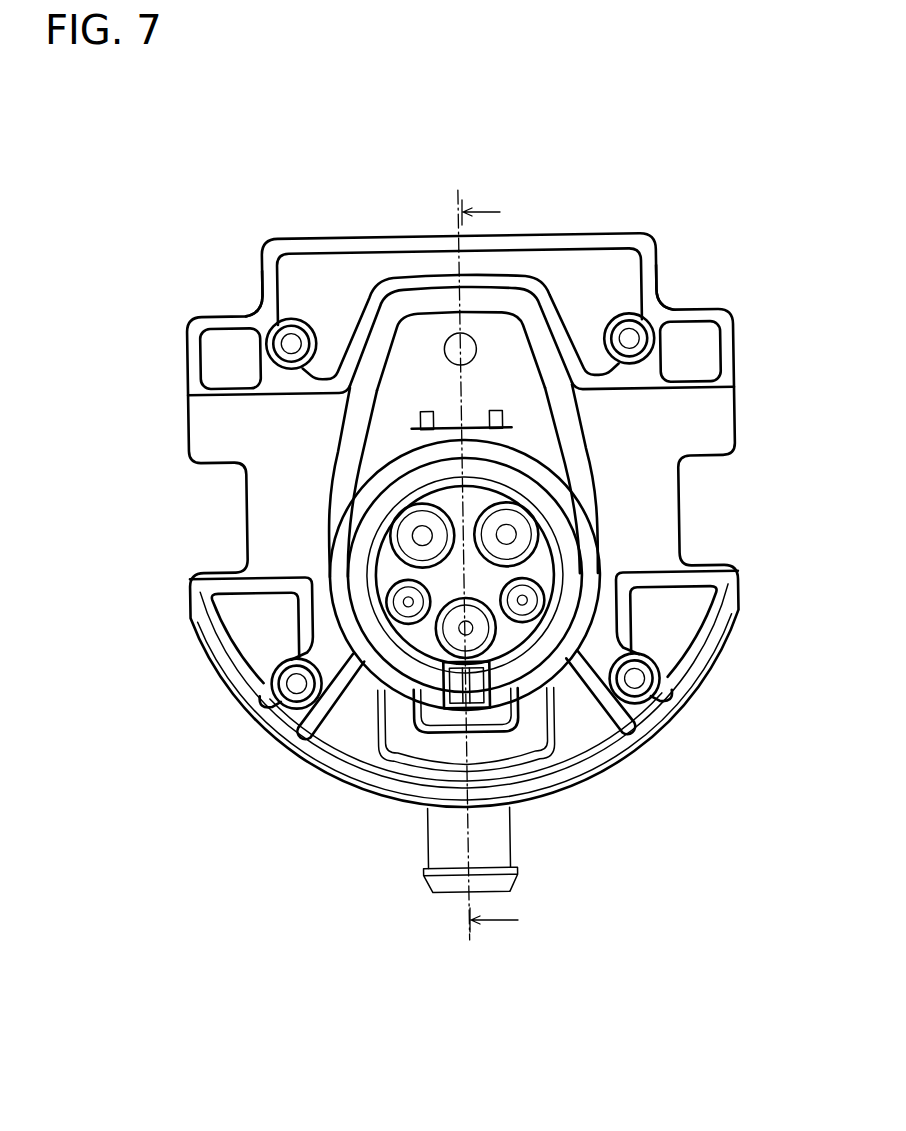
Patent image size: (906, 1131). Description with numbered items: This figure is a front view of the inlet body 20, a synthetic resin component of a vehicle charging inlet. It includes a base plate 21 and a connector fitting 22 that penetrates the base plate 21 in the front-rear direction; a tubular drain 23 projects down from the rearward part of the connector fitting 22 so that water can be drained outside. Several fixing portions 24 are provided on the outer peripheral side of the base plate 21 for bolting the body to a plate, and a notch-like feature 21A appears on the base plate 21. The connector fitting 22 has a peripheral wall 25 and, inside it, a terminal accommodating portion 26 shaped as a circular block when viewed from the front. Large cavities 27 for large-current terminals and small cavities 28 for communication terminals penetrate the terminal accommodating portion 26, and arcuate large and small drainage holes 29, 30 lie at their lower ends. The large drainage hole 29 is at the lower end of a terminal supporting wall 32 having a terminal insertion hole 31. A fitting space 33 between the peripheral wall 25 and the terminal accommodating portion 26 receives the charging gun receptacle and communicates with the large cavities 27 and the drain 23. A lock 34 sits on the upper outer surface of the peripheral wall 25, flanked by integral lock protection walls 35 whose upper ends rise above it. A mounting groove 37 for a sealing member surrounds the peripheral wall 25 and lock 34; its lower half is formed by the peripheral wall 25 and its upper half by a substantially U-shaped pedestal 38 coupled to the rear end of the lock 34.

The inlet body 20 is at (453, 147).
The base plate 21 is at (437, 258).
The notch of flange 21A is at (262, 305).
The connector fitting 22 is at (355, 864).
The drain 23 is at (458, 878).
The fixing portions 24 is at (272, 348).
The peripheral wall 25 is at (365, 648).
The terminal accommodating portion 26 is at (423, 634).
The large cavities 27 is at (378, 552).
The small cavities 28 is at (390, 607).
The large drainage holes 29 is at (425, 566).
The small drainage holes 30 is at (353, 643).
The terminal insertion hole 31 is at (400, 547).
The terminal supporting wall 32 is at (420, 533).
The fitting space 33 is at (543, 730).
The lock 34 is at (467, 414).
The lock protection walls 35 is at (436, 418).
The mounting groove 37 is at (483, 298).
The pedestal 38 is at (530, 407).